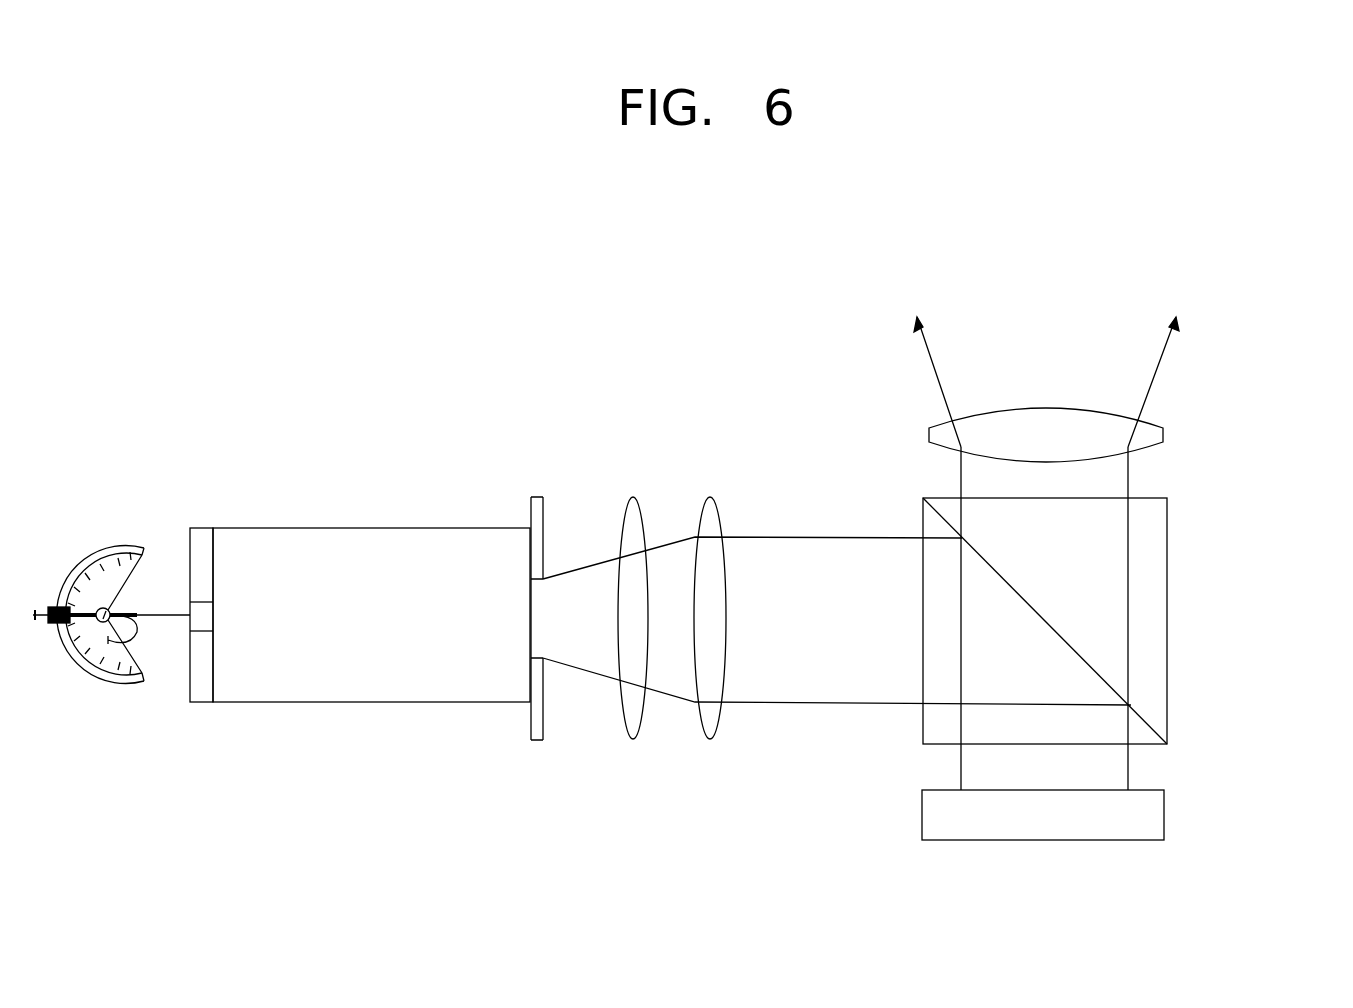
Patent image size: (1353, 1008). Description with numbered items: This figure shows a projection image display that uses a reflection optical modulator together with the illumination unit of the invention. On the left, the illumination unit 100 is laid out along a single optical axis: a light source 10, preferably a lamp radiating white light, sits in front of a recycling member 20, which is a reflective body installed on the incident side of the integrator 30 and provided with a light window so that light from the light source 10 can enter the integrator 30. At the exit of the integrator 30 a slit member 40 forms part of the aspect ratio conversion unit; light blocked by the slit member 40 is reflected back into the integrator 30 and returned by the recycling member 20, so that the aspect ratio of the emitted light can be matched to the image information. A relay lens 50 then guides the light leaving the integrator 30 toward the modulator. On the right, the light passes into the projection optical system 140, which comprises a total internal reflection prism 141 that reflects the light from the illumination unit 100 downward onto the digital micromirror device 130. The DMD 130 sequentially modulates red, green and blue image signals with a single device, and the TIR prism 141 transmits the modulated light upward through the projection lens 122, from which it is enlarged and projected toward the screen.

The light source 10 is at (75, 536).
The recycling member 20 is at (203, 528).
The integrator 30 is at (343, 528).
The slit member 40 is at (538, 497).
The relay lens 50 is at (712, 482).
The illumination unit 100 is at (673, 418).
The projection lens 122 is at (1163, 433).
The digital micromirror device (DMD) 130 is at (1164, 818).
The projection optical system 140 is at (1270, 405).
The total internal reflection (TIR) prism 141 is at (1167, 510).